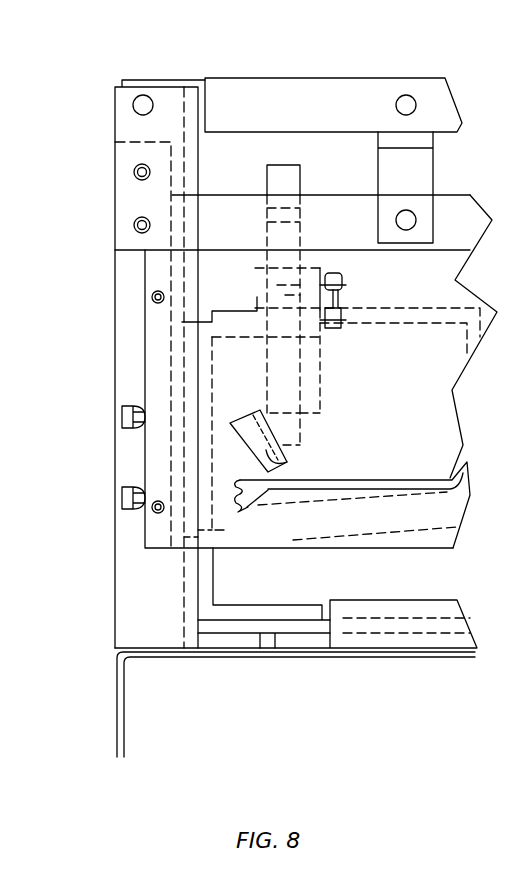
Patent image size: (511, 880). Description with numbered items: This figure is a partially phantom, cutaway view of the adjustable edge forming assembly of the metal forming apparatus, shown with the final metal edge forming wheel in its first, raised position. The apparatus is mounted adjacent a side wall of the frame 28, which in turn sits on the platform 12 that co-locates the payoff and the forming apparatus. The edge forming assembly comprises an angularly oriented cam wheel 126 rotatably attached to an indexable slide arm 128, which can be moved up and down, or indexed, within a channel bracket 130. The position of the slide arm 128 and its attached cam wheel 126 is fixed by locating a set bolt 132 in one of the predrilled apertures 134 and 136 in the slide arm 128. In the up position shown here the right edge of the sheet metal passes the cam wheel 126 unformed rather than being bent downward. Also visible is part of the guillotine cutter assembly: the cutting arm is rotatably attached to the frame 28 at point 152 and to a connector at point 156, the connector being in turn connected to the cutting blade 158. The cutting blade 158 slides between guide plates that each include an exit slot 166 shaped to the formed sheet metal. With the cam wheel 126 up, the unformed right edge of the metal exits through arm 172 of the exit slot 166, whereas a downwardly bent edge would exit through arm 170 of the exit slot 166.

The platform 12 is at (297, 655).
The frame 28 is at (133, 198).
The cam wheel 126 is at (268, 452).
The indexable slide arm 128 is at (275, 172).
The channel bracket 130 is at (306, 384).
The set bolt 132 is at (345, 287).
The predrilled aperture 134 is at (290, 215).
The predrilled aperture 136 is at (275, 287).
The point 152 is at (143, 103).
The point 156 is at (407, 103).
The cutting blade 158 is at (362, 527).
The exit slot 166 is at (452, 475).
The arm of exit slot 170 is at (238, 512).
The arm of exit slot 172 is at (245, 484).